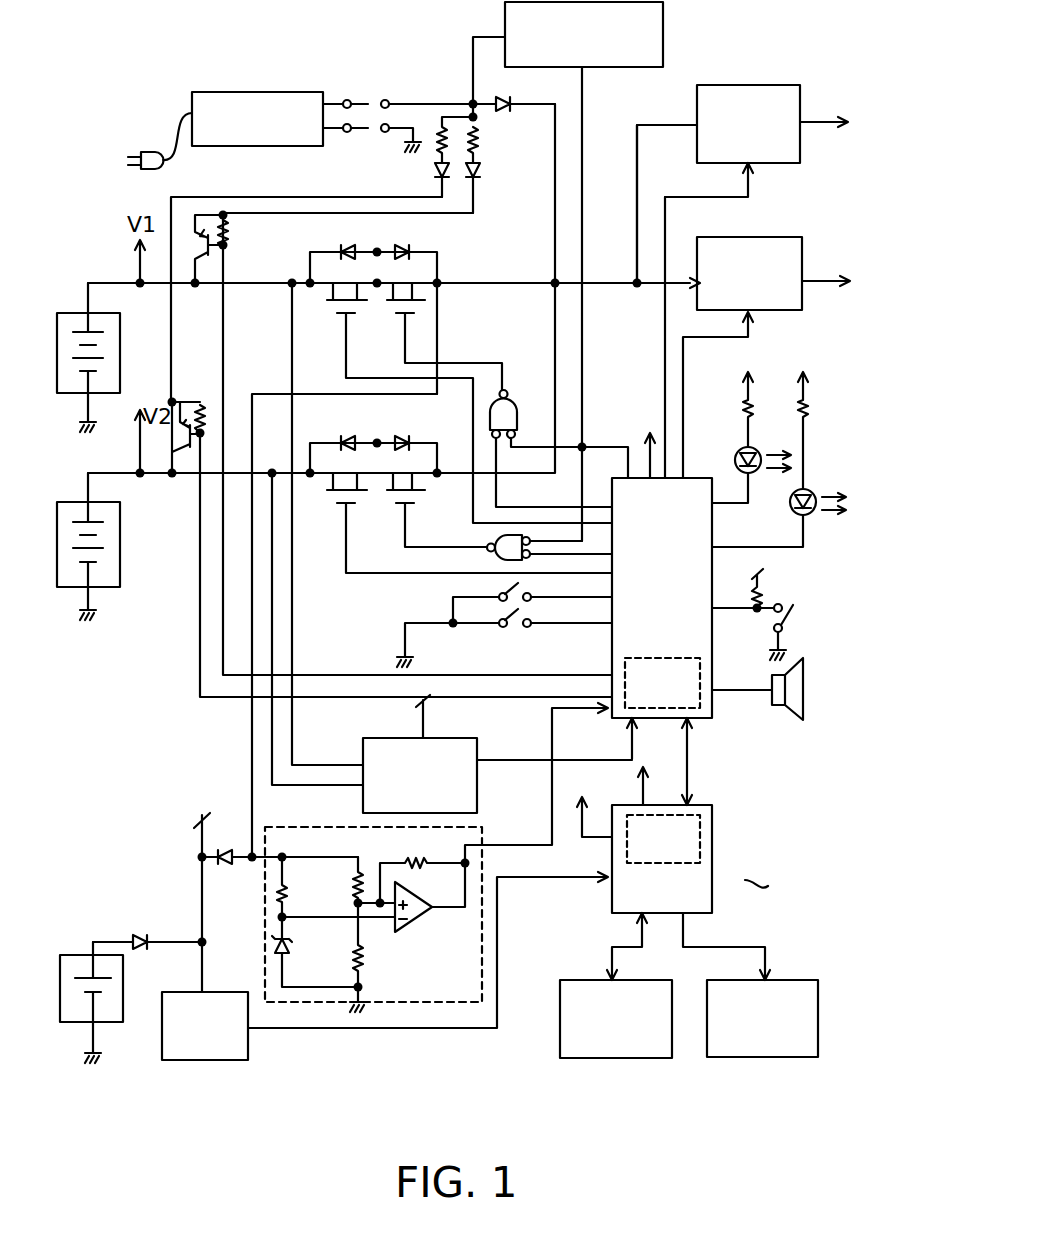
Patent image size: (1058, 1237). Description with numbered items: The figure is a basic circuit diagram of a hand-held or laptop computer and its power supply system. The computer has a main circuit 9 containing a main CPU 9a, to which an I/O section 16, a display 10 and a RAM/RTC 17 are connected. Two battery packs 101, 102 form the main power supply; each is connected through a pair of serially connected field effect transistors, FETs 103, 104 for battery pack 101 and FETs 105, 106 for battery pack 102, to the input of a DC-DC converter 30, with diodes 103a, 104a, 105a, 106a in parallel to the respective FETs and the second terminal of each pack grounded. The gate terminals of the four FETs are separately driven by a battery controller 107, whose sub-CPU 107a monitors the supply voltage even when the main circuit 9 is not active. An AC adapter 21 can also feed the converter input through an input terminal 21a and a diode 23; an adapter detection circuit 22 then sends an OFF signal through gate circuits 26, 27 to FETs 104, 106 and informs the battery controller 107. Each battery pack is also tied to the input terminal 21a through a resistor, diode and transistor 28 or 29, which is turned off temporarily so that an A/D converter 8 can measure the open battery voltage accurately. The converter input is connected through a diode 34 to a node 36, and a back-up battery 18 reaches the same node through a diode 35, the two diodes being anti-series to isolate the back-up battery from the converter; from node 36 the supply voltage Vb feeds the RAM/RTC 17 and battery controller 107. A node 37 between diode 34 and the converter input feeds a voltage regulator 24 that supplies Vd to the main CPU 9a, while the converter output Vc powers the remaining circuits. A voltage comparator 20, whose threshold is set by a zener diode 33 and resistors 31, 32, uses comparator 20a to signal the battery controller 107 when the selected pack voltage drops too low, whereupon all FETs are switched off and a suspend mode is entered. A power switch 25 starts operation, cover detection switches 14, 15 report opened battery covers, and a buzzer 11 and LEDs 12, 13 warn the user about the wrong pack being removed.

The A/D converter 8 is at (478, 798).
The main circuit 9 is at (713, 845).
The main CPU 9a is at (702, 822).
The display 10 is at (818, 1008).
The buzzer 11 is at (803, 700).
The LED 12 is at (813, 520).
The LED 13 is at (732, 447).
The cover detection switch 14 is at (470, 588).
The cover detection switch 15 is at (497, 630).
The I/O section 16 is at (560, 1052).
The RAM/RTC 17 is at (250, 1048).
The back-up battery 18 is at (123, 1002).
The voltage comparator 20 is at (409, 888).
The comparator 20a is at (494, 840).
The AC adapter 21 is at (248, 146).
The input terminal 21a is at (404, 101).
The adapter detection circuit 22 is at (663, 14).
The diode 23 is at (504, 112).
The voltage regulator 24 is at (780, 85).
The power switch 25 is at (797, 595).
The gate circuit 26 is at (508, 533).
The gate circuit 27 is at (506, 402).
The transistor 28 is at (210, 257).
The transistor 29 is at (178, 400).
The DC-DC converter 30 is at (775, 237).
The resistor 31 is at (348, 882).
The resistor 32 is at (348, 952).
The zener diode 33 is at (273, 948).
The diode 34 is at (228, 864).
The diode 35 is at (130, 935).
The node 36 is at (198, 857).
The node 37 is at (637, 281).
The battery pack 101 is at (120, 330).
The battery pack 102 is at (120, 560).
The field effect transistor 103 is at (360, 305).
The diode 103a is at (341, 246).
The field effect transistor 104 is at (418, 305).
The diode 104a is at (410, 247).
The field effect transistor 105 is at (358, 496).
The diode 105a is at (362, 420).
The field effect transistor 106 is at (420, 497).
The diode 106a is at (440, 418).
The battery controller 107 is at (702, 720).
The sub-CPU 107a is at (628, 660).